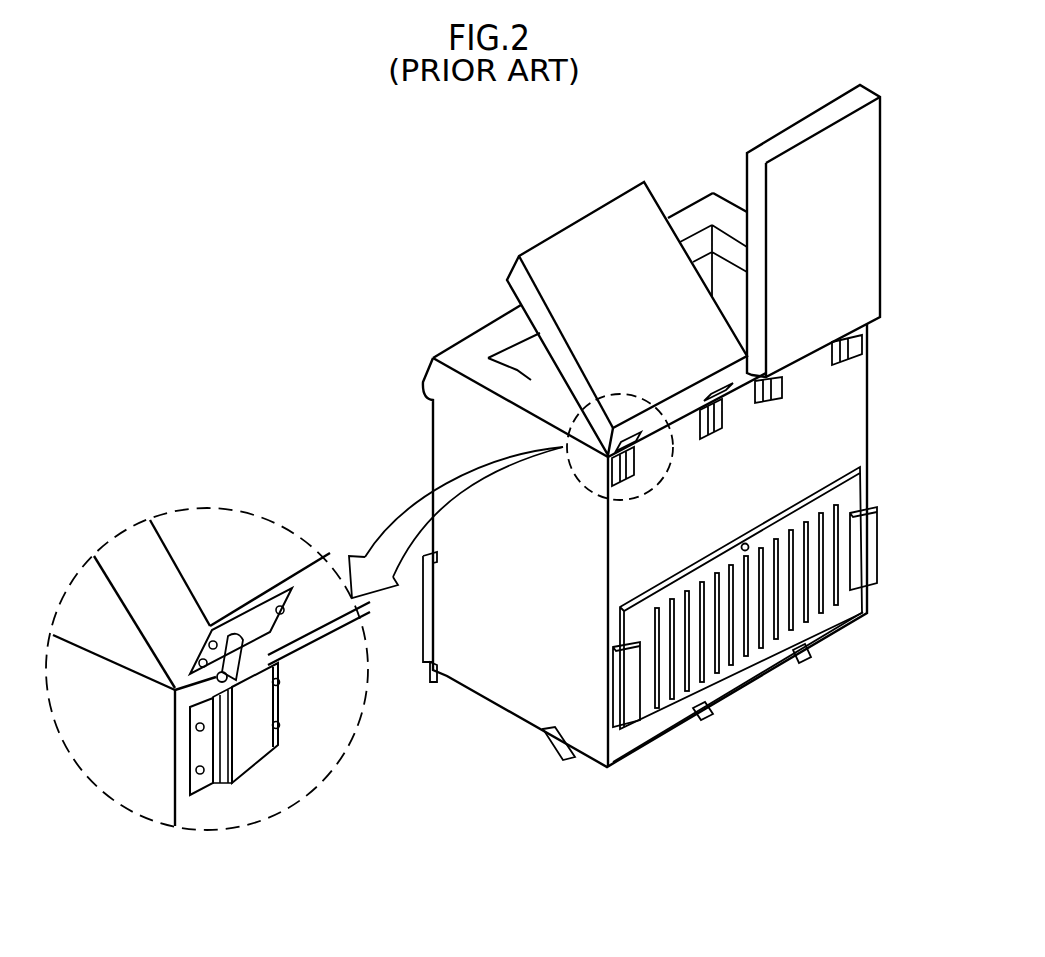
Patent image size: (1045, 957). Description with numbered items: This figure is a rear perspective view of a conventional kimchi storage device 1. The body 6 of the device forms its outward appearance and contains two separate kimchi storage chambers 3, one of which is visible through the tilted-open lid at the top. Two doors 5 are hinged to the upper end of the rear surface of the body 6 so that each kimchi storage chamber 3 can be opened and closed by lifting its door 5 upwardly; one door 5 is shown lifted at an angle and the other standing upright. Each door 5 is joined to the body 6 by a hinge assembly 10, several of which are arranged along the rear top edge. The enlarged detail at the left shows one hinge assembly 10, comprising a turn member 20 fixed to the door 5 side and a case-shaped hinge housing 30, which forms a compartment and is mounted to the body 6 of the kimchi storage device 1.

The kimchi storage device 1 is at (416, 345).
The kimchi storage chamber 3 is at (723, 271).
The door 5 is at (877, 208).
The body 6 is at (442, 458).
The hinge assembly 10 is at (848, 376).
The turn member 20 is at (252, 648).
The hinge housing 30 is at (243, 757).